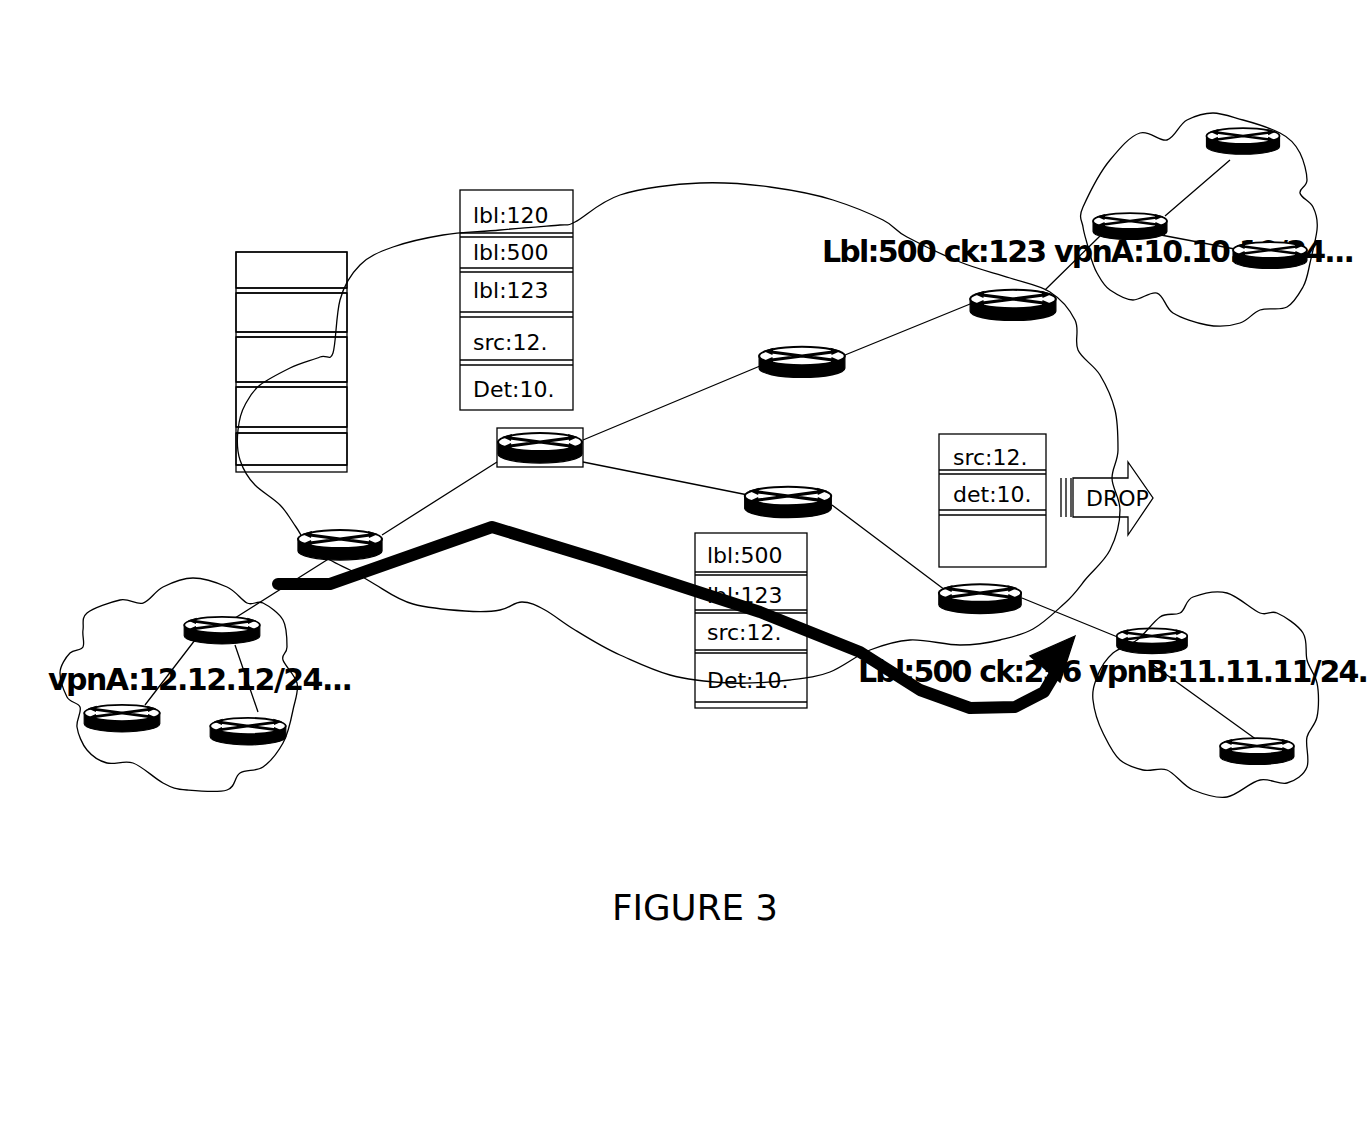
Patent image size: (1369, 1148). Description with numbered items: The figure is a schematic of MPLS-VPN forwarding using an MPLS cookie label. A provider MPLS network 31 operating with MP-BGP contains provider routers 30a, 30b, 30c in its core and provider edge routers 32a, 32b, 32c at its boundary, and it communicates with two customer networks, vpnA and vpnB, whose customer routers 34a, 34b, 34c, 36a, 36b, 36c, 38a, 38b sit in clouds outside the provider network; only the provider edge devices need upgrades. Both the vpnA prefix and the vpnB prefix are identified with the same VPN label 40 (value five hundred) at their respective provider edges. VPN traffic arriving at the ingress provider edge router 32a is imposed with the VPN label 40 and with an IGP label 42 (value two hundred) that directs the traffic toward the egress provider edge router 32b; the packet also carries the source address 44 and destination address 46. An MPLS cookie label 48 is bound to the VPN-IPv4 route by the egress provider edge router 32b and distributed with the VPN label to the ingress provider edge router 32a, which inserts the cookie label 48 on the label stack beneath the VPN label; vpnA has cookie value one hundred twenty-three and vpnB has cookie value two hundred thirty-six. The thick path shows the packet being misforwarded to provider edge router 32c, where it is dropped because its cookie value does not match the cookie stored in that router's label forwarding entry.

The provider MPLS network 31 is at (768, 190).
The provider router 30a is at (552, 464).
The provider router 30b is at (782, 350).
The provider router 30c is at (790, 490).
The provider edge router 32a is at (348, 540).
The provider edge router 32b is at (1012, 300).
The provider edge router 32c is at (970, 606).
The customer router 34a is at (258, 628).
The customer router 34b is at (285, 722).
The customer router 34c is at (90, 704).
The customer router 36a is at (1097, 221).
The customer router 36b is at (1245, 130).
The customer router 36c is at (1265, 235).
The customer router 38a is at (1150, 626).
The customer router 38b is at (1232, 766).
The VPN label 40 is at (236, 313).
The IGP label 42 is at (236, 264).
The source address 44 is at (236, 407).
The destination address 46 is at (236, 453).
The MPLS cookie label 48 is at (236, 362).